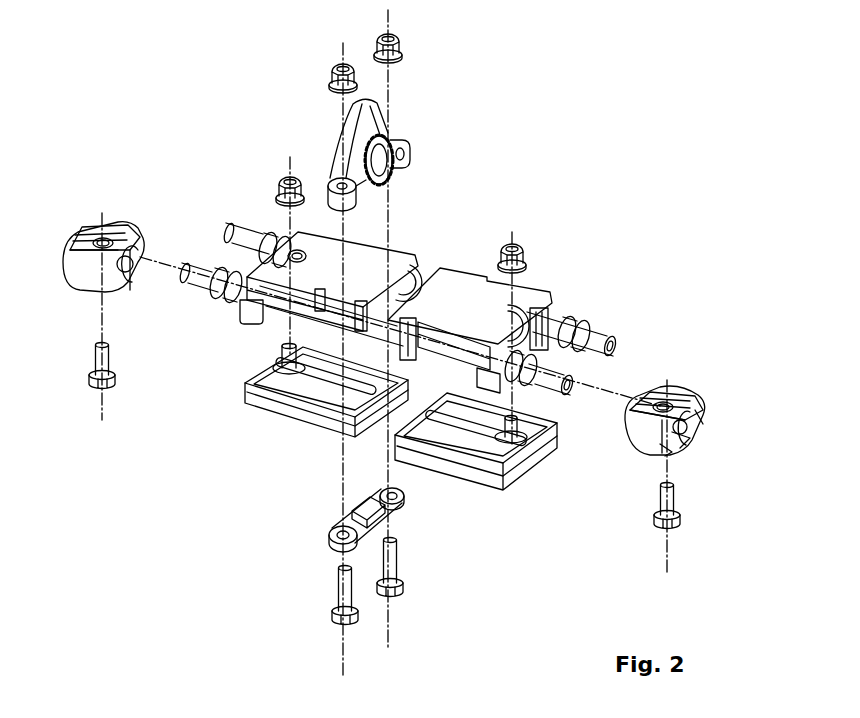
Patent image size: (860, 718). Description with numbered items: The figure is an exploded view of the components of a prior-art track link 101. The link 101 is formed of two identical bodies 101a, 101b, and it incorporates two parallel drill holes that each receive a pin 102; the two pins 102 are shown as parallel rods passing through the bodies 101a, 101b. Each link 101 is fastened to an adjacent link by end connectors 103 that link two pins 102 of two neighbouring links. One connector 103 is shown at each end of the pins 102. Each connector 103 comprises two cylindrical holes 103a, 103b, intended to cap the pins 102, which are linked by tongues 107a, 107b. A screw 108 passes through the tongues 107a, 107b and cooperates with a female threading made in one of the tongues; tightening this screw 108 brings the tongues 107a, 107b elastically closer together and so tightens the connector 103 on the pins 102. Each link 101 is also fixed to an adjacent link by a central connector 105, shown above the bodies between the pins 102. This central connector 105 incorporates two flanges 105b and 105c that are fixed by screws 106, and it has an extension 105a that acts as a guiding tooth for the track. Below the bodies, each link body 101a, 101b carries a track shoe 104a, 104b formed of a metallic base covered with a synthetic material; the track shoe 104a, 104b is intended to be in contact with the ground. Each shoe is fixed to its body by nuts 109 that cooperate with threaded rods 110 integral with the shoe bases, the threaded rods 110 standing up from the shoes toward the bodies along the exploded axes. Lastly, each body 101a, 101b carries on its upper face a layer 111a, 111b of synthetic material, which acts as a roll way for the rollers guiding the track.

The link 101 is at (527, 185).
The link body 101a is at (398, 231).
The link body 101b is at (532, 287).
The pin 102 is at (222, 236).
The connector 103 is at (72, 277).
The cylindrical hole 103a is at (703, 418).
The cylindrical hole 103b is at (670, 447).
The track shoe 104a is at (312, 413).
The track shoe 104b is at (485, 480).
The central connector 105 is at (430, 110).
The extension 105a is at (355, 105).
The flange 105b is at (327, 545).
The flange 105c is at (410, 165).
The screw 106 is at (393, 600).
The tongue 107a is at (680, 392).
The tongue 107b is at (680, 440).
The screw 108 is at (647, 508).
The nut 109 is at (282, 180).
The threaded rod 110 is at (283, 348).
The layer of synthetic material 111a is at (331, 280).
The layer of synthetic material 111b is at (490, 330).